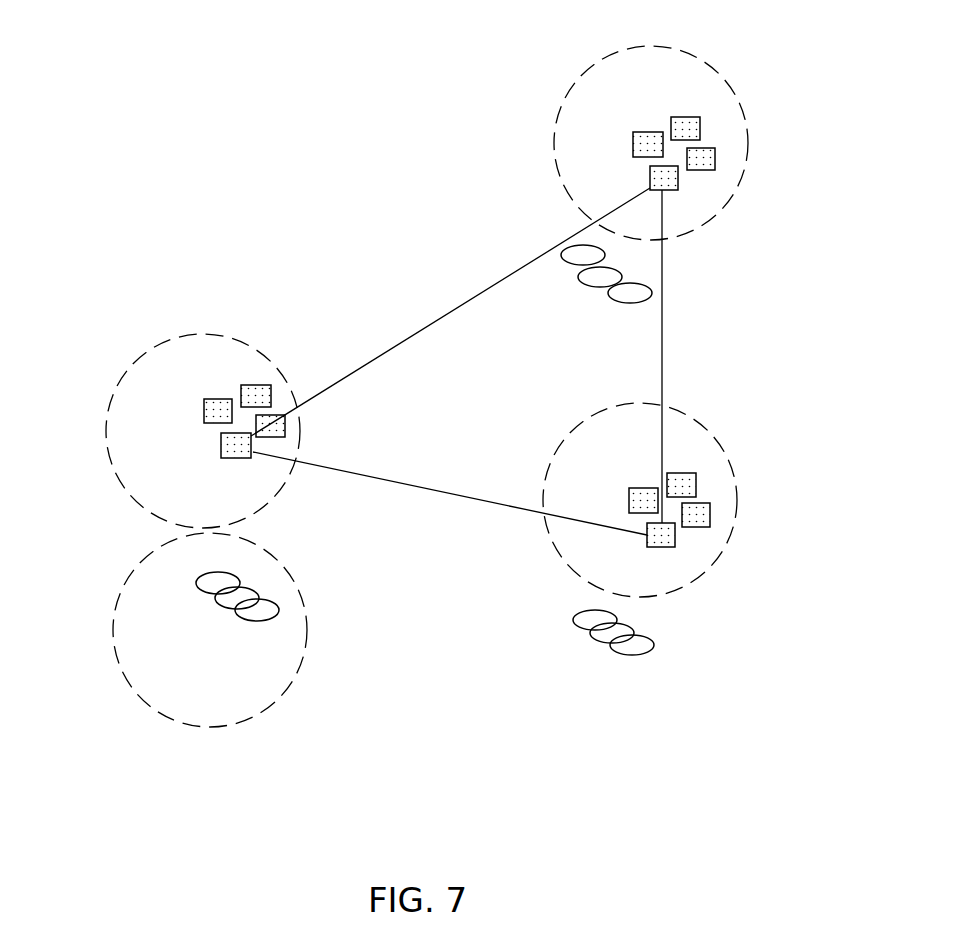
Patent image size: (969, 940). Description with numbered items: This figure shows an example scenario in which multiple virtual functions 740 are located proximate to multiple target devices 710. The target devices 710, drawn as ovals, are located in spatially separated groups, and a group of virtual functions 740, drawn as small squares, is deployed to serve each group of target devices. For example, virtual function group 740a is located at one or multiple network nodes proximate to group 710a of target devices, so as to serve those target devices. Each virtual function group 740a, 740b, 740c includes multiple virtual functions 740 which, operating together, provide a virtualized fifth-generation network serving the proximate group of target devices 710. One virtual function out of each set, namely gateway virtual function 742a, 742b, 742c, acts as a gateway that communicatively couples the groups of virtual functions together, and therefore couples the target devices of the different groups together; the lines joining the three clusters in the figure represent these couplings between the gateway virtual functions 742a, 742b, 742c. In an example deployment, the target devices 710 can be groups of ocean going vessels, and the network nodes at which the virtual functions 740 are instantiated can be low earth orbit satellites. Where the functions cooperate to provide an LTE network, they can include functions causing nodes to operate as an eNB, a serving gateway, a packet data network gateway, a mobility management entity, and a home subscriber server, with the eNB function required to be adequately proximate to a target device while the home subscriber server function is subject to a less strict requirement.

The virtual function group 740a is at (125, 375).
The virtual function group 740b is at (583, 80).
The virtual function group 740c is at (568, 437).
The group of target devices 710a is at (113, 622).
The virtual functions 740 is at (663, 143).
The target devices 710 is at (608, 257).
The gateway virtual function 742a is at (252, 456).
The gateway virtual function 742b is at (678, 192).
The gateway virtual function 742c is at (676, 546).